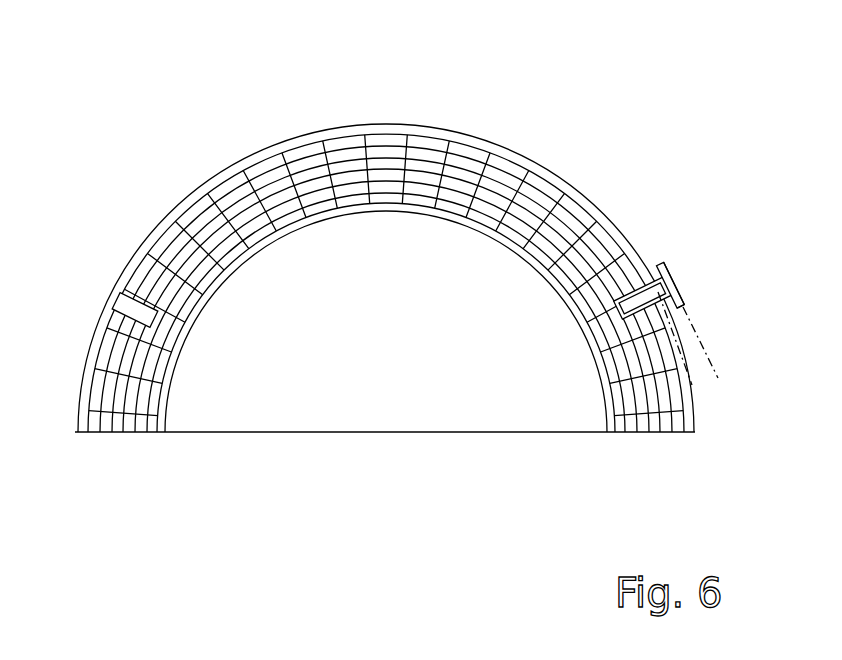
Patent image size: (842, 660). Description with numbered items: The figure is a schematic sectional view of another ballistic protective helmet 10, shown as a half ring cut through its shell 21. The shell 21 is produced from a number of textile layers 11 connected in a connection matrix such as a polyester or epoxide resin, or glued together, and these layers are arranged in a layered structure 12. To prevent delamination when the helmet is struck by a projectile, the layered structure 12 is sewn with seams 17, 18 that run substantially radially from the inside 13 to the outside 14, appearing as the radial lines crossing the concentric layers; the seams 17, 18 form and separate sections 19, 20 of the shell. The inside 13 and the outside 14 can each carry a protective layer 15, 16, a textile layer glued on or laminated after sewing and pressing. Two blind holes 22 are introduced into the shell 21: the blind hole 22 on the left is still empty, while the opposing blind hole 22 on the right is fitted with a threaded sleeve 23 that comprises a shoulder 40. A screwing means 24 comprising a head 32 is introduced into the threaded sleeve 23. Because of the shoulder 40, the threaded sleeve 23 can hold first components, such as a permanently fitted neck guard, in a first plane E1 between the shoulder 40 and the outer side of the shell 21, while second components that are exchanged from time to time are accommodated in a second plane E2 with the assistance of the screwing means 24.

The ballistic protective helmet 10 is at (485, 113).
The textile layers 11 is at (678, 427).
The layered structure 12 is at (645, 437).
The inside 13 is at (173, 390).
The outside 14 is at (213, 152).
The protective layer 15 is at (605, 417).
The protective layer 16 is at (553, 172).
The seam 17 is at (332, 165).
The seam 18 is at (627, 283).
The section 19 is at (413, 213).
The section 20 is at (392, 130).
The shell 21 is at (175, 207).
The blind hole 22 is at (113, 300).
The threaded sleeve 23 is at (650, 267).
The screwing means 24 is at (685, 280).
The head 32 is at (688, 302).
The shoulder 40 is at (676, 265).
The first plane E1 is at (707, 387).
The second plane E2 is at (717, 376).